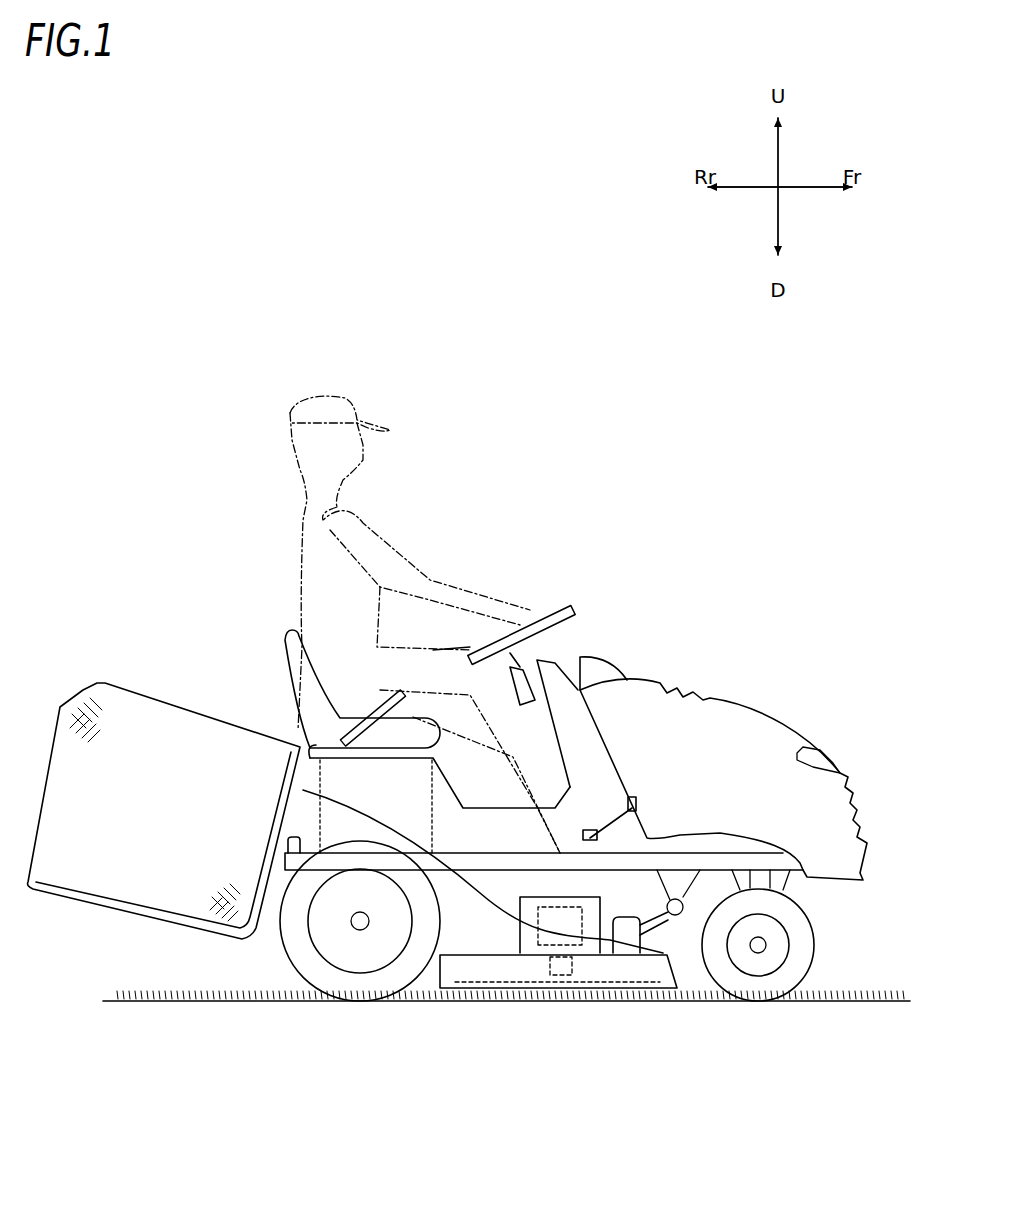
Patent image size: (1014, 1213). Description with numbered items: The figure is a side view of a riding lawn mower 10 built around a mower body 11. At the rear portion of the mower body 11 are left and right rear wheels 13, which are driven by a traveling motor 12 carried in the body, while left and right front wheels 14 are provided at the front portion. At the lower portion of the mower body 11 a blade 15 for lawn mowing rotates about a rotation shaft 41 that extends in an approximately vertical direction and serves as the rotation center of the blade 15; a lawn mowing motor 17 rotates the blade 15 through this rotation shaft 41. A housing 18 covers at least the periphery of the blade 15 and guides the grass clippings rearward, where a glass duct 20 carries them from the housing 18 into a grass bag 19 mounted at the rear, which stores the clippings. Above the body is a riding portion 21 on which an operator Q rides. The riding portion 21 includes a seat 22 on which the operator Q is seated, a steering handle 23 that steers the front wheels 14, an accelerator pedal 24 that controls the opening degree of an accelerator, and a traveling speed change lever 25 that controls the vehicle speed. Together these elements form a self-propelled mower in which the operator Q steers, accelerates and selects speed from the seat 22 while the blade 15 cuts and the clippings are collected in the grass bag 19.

The lawn mower 10 is at (744, 486).
The mower body 11 is at (715, 863).
The traveling motor 12 is at (290, 763).
The rear wheels 13 is at (297, 963).
The front wheels 14 is at (820, 935).
The blade 15 is at (610, 1003).
The lawn mowing motor 17 is at (582, 977).
The housing 18 is at (465, 968).
The grass bag 19 is at (187, 720).
The glass duct 20 is at (455, 933).
The riding portion 21 is at (504, 590).
The seat 22 is at (295, 637).
The steering handle 23 is at (567, 607).
The accelerator pedal 24 is at (622, 837).
The traveling speed change lever 25 is at (403, 693).
The rotation shaft 41 is at (545, 977).
The operator Q is at (293, 533).